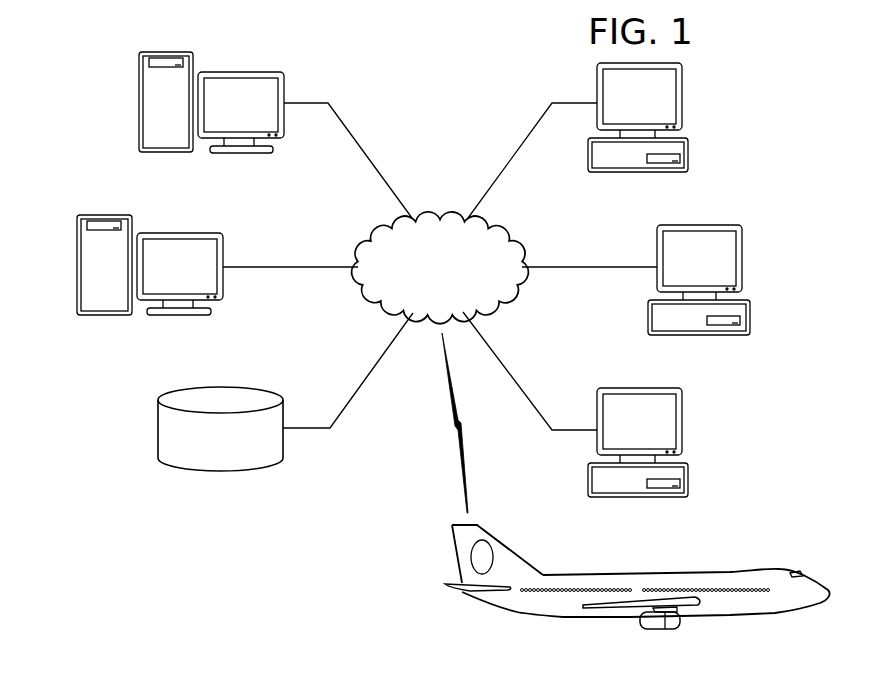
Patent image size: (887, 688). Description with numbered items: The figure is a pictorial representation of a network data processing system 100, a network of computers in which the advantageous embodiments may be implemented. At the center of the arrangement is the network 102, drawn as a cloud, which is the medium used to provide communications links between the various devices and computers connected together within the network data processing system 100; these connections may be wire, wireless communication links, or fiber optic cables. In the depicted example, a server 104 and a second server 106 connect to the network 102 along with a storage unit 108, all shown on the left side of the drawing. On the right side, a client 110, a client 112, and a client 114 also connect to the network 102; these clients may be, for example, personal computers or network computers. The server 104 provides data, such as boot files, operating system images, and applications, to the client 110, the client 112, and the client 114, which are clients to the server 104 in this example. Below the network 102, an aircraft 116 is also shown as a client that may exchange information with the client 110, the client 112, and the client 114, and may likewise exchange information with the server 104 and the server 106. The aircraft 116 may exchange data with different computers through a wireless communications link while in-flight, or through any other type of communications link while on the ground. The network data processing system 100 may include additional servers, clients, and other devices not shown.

The network data processing system 100 is at (348, 55).
The network 102 is at (432, 212).
The server 104 is at (138, 97).
The server 106 is at (77, 262).
The storage unit 108 is at (158, 435).
The client 110 is at (688, 156).
The client 112 is at (750, 318).
The client 114 is at (688, 480).
The aircraft 116 is at (743, 618).